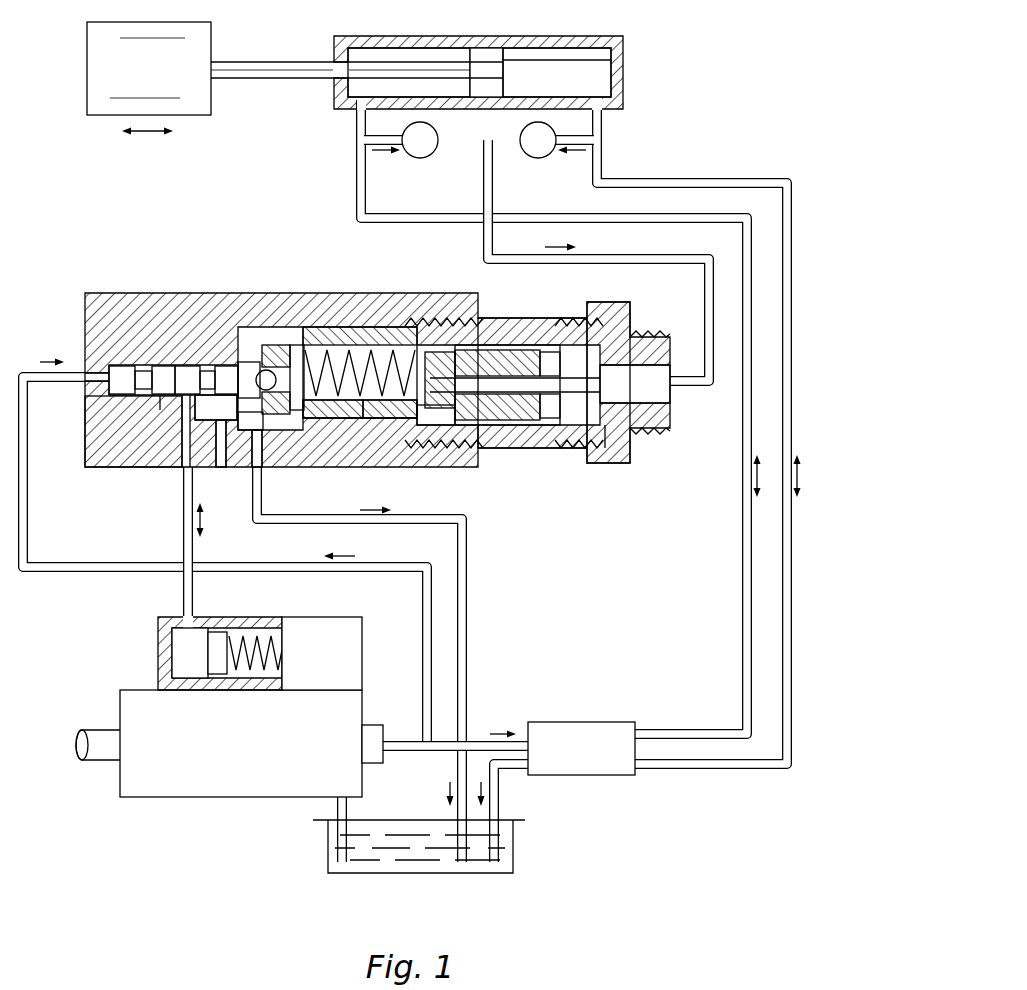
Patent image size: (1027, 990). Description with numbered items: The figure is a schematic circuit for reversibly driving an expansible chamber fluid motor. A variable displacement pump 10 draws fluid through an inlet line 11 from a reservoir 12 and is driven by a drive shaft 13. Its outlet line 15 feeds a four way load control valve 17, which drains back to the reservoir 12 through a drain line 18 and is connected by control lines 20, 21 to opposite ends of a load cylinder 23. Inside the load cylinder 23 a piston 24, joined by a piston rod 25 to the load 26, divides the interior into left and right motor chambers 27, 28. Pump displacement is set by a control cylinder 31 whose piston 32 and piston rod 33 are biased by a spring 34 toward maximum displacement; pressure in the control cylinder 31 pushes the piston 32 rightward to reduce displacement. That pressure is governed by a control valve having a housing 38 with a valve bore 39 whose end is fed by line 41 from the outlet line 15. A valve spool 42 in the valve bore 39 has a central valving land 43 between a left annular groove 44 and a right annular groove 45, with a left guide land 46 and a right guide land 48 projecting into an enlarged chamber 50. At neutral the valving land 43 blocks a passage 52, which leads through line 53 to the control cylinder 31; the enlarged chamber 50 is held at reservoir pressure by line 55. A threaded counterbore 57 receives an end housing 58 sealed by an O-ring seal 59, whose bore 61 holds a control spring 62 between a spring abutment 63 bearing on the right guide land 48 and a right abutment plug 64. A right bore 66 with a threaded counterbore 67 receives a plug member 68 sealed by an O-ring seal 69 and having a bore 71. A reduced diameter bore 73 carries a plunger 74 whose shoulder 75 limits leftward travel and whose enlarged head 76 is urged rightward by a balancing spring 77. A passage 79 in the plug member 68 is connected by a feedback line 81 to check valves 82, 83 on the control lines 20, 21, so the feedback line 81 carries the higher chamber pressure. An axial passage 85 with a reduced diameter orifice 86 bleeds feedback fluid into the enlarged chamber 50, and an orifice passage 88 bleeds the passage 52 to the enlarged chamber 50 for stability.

The variable displacement pump 10 is at (252, 721).
The inlet line 11 is at (348, 806).
The reservoir 12 is at (410, 874).
The drive shaft 13 is at (95, 762).
The outlet line 15 is at (412, 751).
The load control valve 17 is at (606, 722).
The drain line 18 is at (499, 793).
The control line 20 is at (742, 566).
The control line 21 is at (762, 770).
The load cylinder 23 is at (630, 66).
The piston 24 is at (487, 48).
The piston rod 25 is at (266, 80).
The load 26 is at (86, 56).
The left fluid motor chamber 27 is at (384, 48).
The right fluid motor chamber 28 is at (573, 60).
The control cylinder 31 is at (186, 652).
The piston 32 is at (218, 628).
The piston rod 33 is at (283, 656).
The spring 34 is at (282, 628).
The housing 38 is at (136, 293).
The valve bore 39 is at (115, 364).
The line 41 is at (28, 495).
The valve spool 42 is at (190, 364).
The central valving land 43 is at (172, 397).
The left annular groove 44 is at (160, 364).
The right annular groove 45 is at (216, 364).
The left guide land 46 is at (133, 431).
The right guide land 48 is at (251, 380).
The enlarged chamber 50 is at (270, 327).
The passage 52 is at (216, 410).
The line 53 is at (183, 511).
The line 55 is at (468, 576).
The threaded counterbore 57 is at (400, 318).
The end housing 58 is at (640, 458).
The O-ring seal 59 is at (320, 467).
The bore 61 is at (372, 438).
The control spring 62 is at (322, 336).
The spring abutment 63 is at (266, 433).
The right abutment plug 64 is at (390, 435).
The bore 66 is at (562, 428).
The threaded counterbore 67 is at (602, 465).
The plug member 68 is at (650, 345).
The O-ring seal 69 is at (498, 333).
The bore 71 is at (516, 414).
The reduced diameter bore 73 is at (438, 423).
The plunger 74 is at (562, 362).
The shoulder 75 is at (484, 448).
The enlarged head 76 is at (565, 407).
The balancing spring 77 is at (540, 345).
The passage 79 is at (604, 385).
The feedback line 81 is at (652, 262).
The check valve 82 is at (423, 158).
The check valve 83 is at (540, 158).
The axial passage 85 is at (440, 365).
The reduced diameter orifice 86 is at (507, 373).
The orifice passage 88 is at (214, 467).